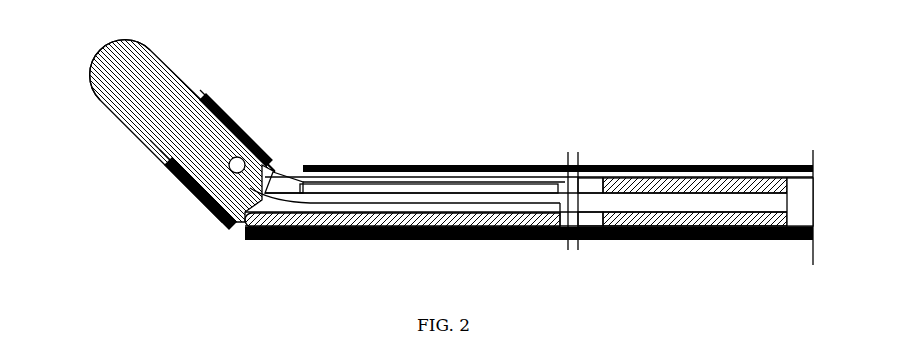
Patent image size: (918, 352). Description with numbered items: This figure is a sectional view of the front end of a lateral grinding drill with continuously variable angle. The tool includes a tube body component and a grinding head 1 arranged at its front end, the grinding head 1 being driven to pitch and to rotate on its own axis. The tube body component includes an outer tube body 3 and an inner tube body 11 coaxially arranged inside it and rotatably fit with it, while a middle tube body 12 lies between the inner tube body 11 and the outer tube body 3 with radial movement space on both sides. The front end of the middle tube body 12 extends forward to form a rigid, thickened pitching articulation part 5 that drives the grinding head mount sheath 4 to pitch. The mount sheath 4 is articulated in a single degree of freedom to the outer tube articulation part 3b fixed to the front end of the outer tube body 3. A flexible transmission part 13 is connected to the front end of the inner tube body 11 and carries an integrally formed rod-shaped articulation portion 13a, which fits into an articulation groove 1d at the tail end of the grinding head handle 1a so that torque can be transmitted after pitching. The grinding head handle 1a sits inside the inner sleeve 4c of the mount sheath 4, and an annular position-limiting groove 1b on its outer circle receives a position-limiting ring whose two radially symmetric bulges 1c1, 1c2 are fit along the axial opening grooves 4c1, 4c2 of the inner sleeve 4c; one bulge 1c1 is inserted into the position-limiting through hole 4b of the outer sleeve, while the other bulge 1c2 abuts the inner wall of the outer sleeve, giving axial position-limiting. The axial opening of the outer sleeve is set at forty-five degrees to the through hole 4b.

The grinding head 1 is at (138, 78).
The grinding head handle 1a is at (153, 143).
The annular position-limiting groove 1b is at (187, 167).
The position-limiting bulge 1c1 is at (233, 126).
The position-limiting bulge 1c2 is at (193, 178).
The articulation groove 1d is at (237, 173).
The outer tube body 3 is at (630, 165).
The outer tube articulation part 3b is at (420, 165).
The grinding head mount sheath 4 is at (258, 151).
The position-limiting through hole 4b is at (242, 128).
The inner sleeve 4c is at (210, 205).
The axial opening groove 4c1 is at (210, 100).
The axial opening groove 4c2 is at (163, 157).
The pitching articulation part 5 is at (327, 210).
The inner tube body 11 is at (775, 165).
The middle tube body 12 is at (693, 165).
The flexible transmission part 13 is at (447, 197).
The rod-shaped articulation portion 13a is at (283, 162).